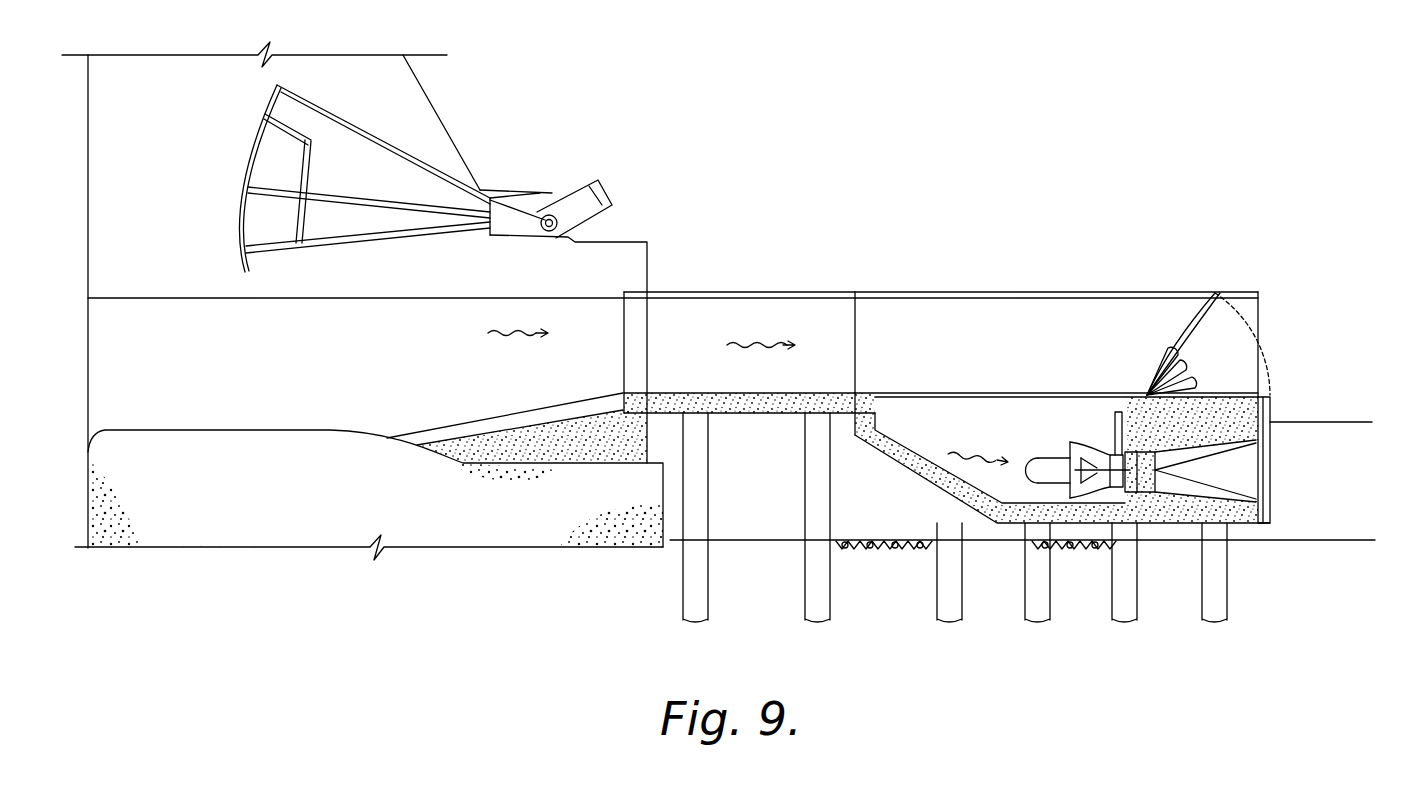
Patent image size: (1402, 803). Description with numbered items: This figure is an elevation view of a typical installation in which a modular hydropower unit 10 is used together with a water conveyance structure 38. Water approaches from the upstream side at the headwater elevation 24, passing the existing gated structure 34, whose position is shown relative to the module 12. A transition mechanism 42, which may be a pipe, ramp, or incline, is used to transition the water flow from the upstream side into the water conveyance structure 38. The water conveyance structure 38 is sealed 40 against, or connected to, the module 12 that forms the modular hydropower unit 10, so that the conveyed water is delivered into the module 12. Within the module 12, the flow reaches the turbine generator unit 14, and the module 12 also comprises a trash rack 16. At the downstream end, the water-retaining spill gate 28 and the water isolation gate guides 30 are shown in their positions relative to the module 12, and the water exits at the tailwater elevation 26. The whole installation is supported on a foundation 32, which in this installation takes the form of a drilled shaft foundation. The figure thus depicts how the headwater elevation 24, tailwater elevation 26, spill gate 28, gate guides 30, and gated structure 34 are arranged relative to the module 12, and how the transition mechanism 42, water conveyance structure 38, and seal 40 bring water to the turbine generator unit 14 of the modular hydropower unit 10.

The modular hydropower unit 10 is at (1280, 305).
The module 12 is at (1050, 305).
The turbine generator unit 14 is at (1035, 460).
The trash rack 16 is at (995, 395).
The headwater elevation 24 is at (135, 297).
The tailwater elevation 26 is at (1325, 422).
The water-retaining spill gate 28 is at (1220, 292).
The water isolation gate guides 30 is at (1270, 475).
The foundation 32 is at (815, 613).
The gated structure 34 is at (637, 242).
The water conveyance structure 38 is at (747, 308).
The seal 40 is at (850, 297).
The transition mechanism 42 is at (528, 412).